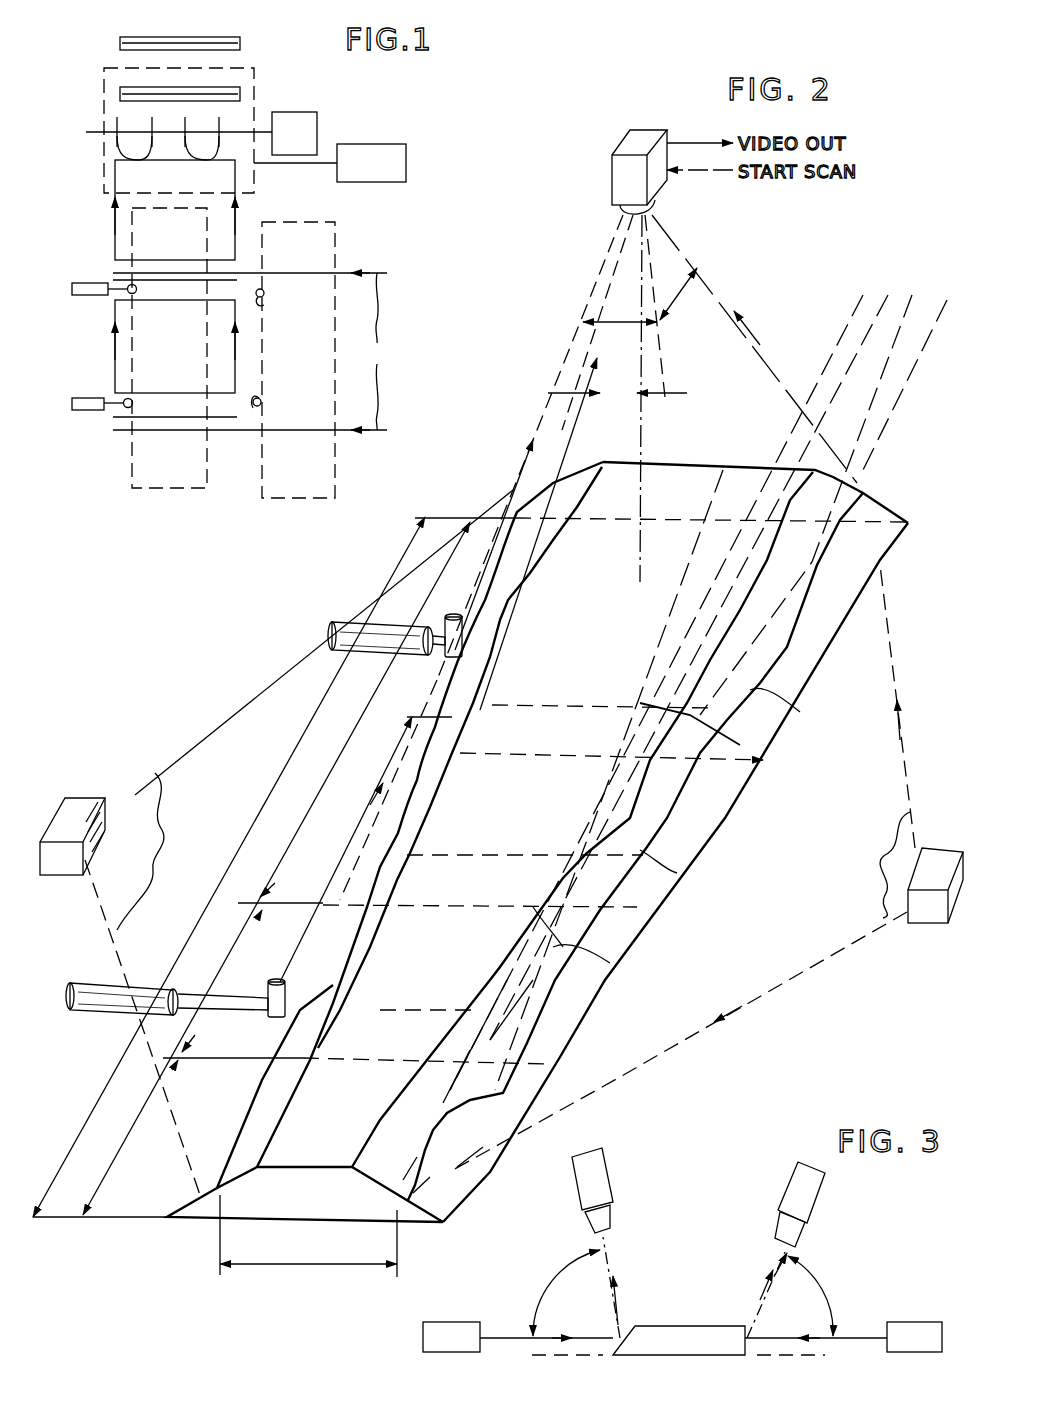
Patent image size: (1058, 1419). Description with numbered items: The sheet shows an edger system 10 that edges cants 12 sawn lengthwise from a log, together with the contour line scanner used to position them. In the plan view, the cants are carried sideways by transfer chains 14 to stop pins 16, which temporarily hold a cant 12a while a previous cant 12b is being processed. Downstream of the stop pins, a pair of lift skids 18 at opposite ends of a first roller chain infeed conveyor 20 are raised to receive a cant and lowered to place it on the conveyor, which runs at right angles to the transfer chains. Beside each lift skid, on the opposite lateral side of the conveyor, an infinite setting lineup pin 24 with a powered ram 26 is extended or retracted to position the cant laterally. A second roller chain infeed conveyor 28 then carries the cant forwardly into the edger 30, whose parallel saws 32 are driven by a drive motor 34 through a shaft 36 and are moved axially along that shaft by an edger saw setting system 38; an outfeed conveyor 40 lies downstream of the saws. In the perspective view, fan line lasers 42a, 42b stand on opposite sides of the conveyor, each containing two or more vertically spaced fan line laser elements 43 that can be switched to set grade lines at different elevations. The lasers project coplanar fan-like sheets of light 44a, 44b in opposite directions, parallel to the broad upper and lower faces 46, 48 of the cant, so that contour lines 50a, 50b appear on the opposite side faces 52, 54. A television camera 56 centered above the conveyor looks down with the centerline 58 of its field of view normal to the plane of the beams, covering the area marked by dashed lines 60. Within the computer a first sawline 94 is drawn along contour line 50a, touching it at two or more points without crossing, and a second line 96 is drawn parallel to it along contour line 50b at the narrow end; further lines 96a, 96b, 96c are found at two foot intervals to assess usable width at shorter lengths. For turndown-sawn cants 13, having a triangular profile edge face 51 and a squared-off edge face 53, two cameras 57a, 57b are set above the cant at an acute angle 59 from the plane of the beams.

In FIG. 1, the edger system 10 is at (363, 125).
In FIG. 2, the cant 12 is at (720, 826).
In FIG. 1, the cant 12a is at (290, 500).
In FIG. 1, the previous cant 12b is at (170, 500).
In FIG. 3, the cant 13 is at (680, 1326).
In FIG. 1, the transfer chains 14 is at (250, 351).
In FIG. 1, the stop pins 16 is at (266, 300).
In FIG. 1, the lift skids 18 is at (180, 273).
In FIG. 1, the first roller chain infeed conveyor 20 is at (238, 346).
In FIG. 1, the infinite setting lineup pin 24 is at (85, 283).
In FIG. 2, the infinite setting lineup pin 24 is at (350, 622).
In FIG. 1, the rams 26 is at (130, 296).
In FIG. 2, the rams 26 is at (259, 990).
In FIG. 1, the second roller chain infeed conveyor 28 is at (237, 213).
In FIG. 1, the edger 30 is at (104, 100).
In FIG. 1, the saws 32 is at (168, 150).
In FIG. 1, the drive motor 34 is at (294, 133).
In FIG. 1, the shaft 36 is at (240, 130).
In FIG. 1, the edger saw setting system 38 is at (330, 163).
In FIG. 1, the outfeed conveyor 40 is at (228, 88).
In FIG. 2, the fan line laser 42a is at (90, 808).
In FIG. 3, the fan line laser 42a is at (450, 1352).
In FIG. 2, the fan line laser 42b is at (948, 848).
In FIG. 3, the fan line laser 42b is at (912, 1352).
In FIG. 2, the fan line laser elements 43 is at (106, 820).
In FIG. 2, the fan-like sheet of light 44a is at (299, 842).
In FIG. 3, the fan-like sheet of light 44a is at (517, 1340).
In FIG. 2, the fan-like sheet of light 44b is at (684, 867).
In FIG. 3, the fan-like sheet of light 44b is at (775, 1340).
In FIG. 2, the upper face 46 is at (312, 1166).
In FIG. 2, the lower face 48 is at (278, 1222).
In FIG. 2, the contour line 50a is at (375, 853).
In FIG. 2, the contour line 50b is at (768, 680).
In FIG. 3, the triangular profile edge face 51 is at (618, 1335).
In FIG. 2, the side face 52 is at (195, 1195).
In FIG. 3, the squared-off edge face 53 is at (750, 1335).
In FIG. 2, the side face 54 is at (410, 1205).
In FIG. 2, the television camera 56 is at (612, 178).
In FIG. 3, the camera 57a is at (613, 1180).
In FIG. 3, the camera 57b is at (800, 1190).
In FIG. 2, the centerline 58 is at (640, 542).
In FIG. 3, the acute angle 59 is at (565, 1270).
In FIG. 2, the dashed lines 60 is at (617, 278).
In FIG. 2, the sawline 94 is at (490, 684).
In FIG. 2, the second line 96 is at (505, 968).
In FIG. 2, the line 96a is at (610, 963).
In FIG. 2, the line 96b is at (677, 873).
In FIG. 2, the line 96c is at (800, 712).